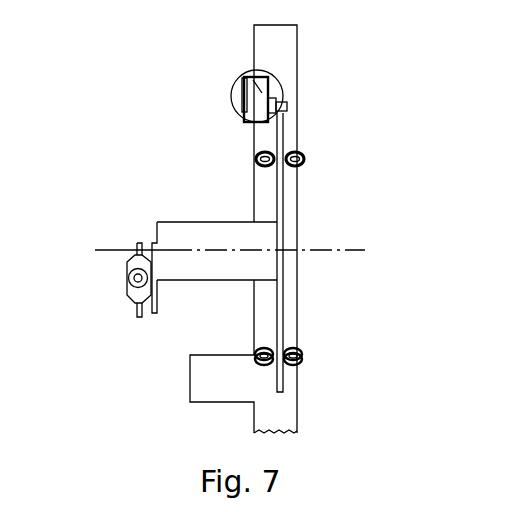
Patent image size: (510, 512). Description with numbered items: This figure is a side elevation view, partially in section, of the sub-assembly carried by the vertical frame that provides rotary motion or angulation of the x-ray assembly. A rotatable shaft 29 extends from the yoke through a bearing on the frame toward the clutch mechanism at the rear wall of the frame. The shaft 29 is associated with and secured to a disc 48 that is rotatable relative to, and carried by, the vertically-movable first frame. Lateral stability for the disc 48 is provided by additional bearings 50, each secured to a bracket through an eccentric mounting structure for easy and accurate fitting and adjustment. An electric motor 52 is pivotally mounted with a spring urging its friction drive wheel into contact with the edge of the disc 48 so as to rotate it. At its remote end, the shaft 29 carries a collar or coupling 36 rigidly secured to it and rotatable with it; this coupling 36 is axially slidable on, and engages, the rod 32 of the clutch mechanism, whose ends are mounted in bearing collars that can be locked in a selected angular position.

The rotatable shaft 29 is at (186, 228).
The rod 32 is at (127, 295).
The collar or coupling 36 is at (130, 265).
The disc 48 is at (282, 322).
The lateral bearings 50 is at (256, 158).
The electric motor 52 is at (246, 73).